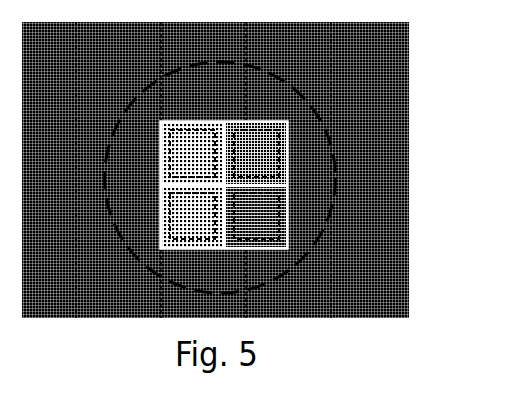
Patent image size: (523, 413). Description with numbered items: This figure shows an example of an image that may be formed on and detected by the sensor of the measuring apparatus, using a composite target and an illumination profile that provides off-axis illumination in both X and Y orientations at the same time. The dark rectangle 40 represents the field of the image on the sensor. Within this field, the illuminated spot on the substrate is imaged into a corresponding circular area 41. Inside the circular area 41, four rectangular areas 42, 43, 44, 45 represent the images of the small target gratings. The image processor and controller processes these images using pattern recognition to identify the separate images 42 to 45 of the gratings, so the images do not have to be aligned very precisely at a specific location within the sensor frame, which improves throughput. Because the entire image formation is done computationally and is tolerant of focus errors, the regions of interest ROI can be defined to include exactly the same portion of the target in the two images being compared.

The dark rectangle 40 is at (313, 318).
The circular area 41 is at (150, 90).
The rectangular area 42 is at (162, 148).
The rectangular area 43 is at (162, 231).
The rectangular area 44 is at (288, 222).
The rectangular area 45 is at (288, 151).
The region of interest ROI is at (162, 218).